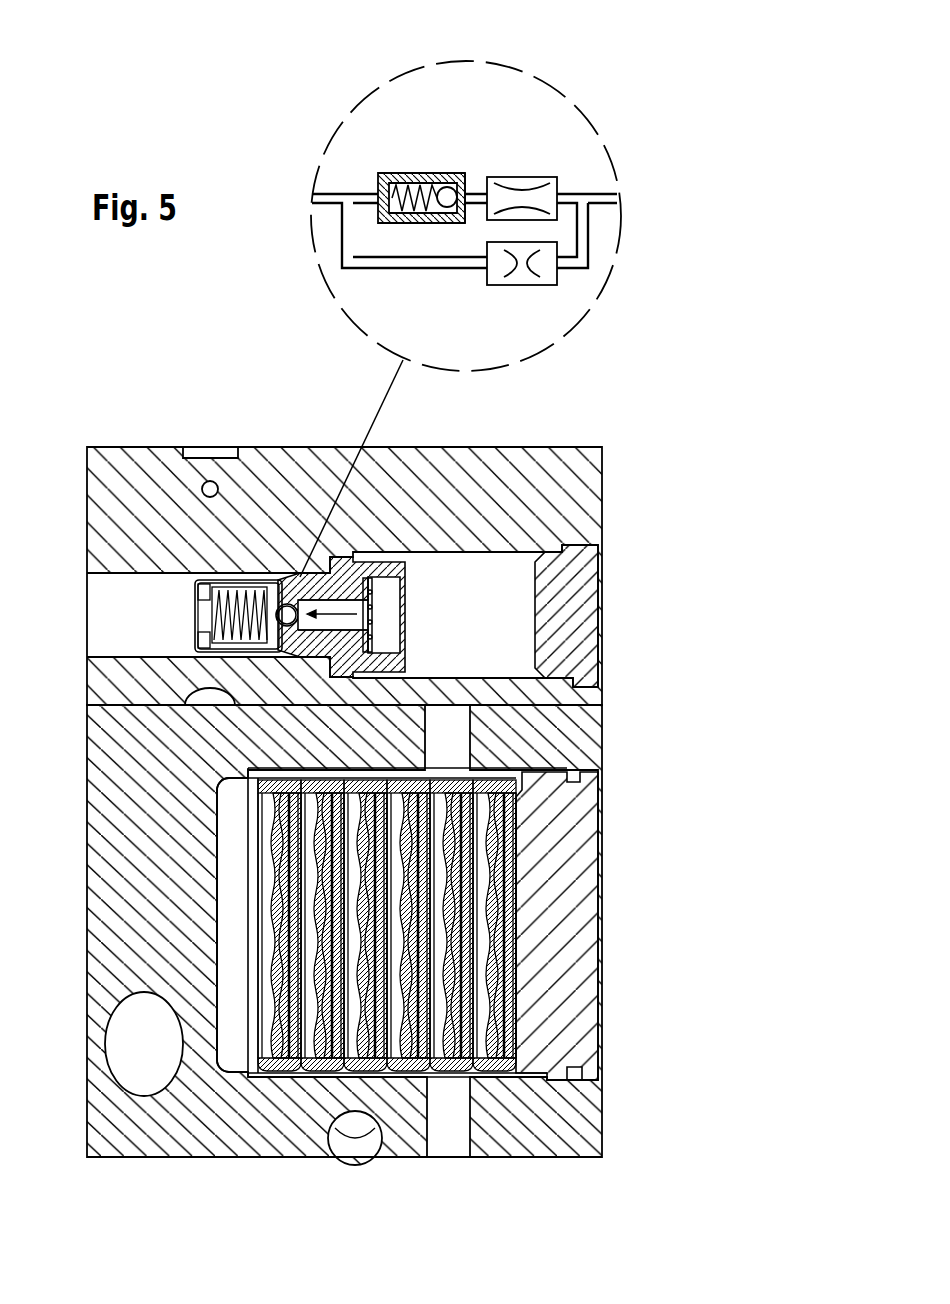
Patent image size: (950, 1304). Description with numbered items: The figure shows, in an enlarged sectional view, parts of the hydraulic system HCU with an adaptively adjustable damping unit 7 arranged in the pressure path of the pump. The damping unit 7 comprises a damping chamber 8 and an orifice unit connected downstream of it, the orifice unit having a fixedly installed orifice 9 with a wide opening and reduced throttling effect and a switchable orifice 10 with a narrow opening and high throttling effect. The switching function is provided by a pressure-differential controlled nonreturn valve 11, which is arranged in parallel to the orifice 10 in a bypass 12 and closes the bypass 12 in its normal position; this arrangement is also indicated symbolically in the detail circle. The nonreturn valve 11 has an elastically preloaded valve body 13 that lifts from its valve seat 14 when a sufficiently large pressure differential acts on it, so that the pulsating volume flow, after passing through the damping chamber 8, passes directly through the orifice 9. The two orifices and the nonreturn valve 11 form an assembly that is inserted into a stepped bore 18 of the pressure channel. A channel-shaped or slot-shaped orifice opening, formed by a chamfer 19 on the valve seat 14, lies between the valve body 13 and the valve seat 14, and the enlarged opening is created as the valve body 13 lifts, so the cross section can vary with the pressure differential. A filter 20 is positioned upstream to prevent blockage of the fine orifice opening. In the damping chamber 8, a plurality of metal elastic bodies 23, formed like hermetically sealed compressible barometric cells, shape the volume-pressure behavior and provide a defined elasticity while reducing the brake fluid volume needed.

The damping unit 7 is at (618, 745).
The damping chamber 8 is at (243, 1057).
The orifice 9 is at (520, 177).
The switchable orifice 10 is at (520, 285).
The nonreturn valve 11 is at (258, 580).
The bypass 12 is at (365, 192).
The valve body 13 is at (272, 592).
The valve seat 14 is at (290, 580).
The stepped bore 18 is at (150, 574).
The chamfer 19 is at (368, 645).
The filter 20 is at (375, 620).
The elastic bodies 23 is at (297, 1058).
The hydraulic system HCU is at (603, 487).